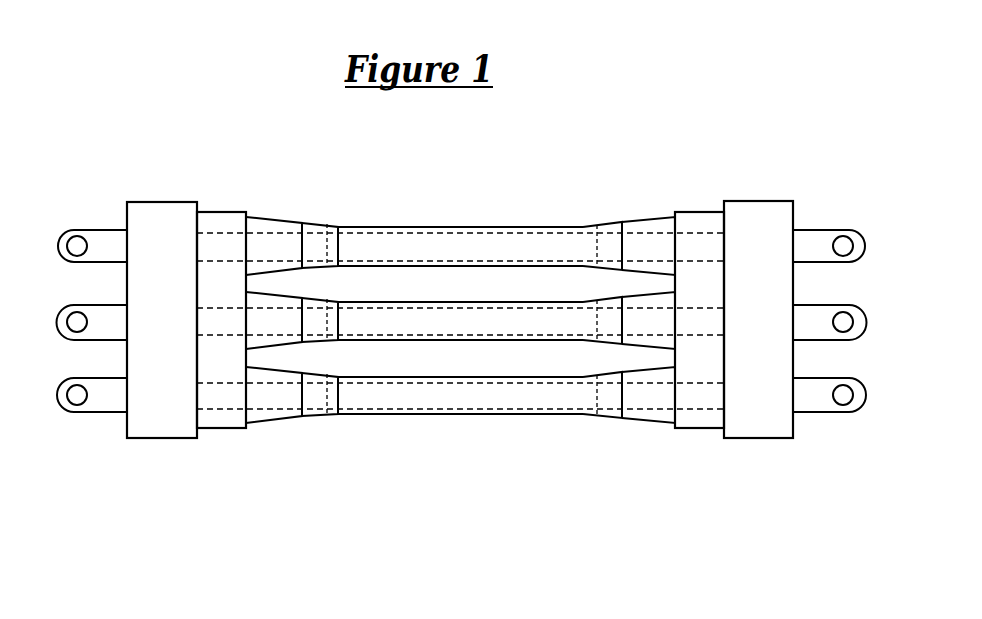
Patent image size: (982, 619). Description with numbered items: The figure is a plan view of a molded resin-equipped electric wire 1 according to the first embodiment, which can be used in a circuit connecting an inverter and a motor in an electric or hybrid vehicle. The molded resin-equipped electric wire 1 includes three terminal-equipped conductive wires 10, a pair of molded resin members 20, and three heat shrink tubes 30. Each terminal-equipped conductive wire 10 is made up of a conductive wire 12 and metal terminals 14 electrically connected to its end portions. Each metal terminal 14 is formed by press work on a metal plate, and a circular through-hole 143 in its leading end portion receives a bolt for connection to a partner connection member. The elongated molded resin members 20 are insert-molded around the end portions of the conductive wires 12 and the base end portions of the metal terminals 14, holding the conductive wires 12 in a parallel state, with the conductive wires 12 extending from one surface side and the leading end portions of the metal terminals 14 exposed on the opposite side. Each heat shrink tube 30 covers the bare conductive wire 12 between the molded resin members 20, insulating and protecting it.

The molded resin-equipped electric wire 1 is at (168, 162).
The terminal-equipped conductive wire 10 is at (573, 270).
The conductive wire 12 is at (510, 376).
The metal terminal 14 is at (110, 230).
The through-hole 143 is at (77, 240).
The molded resin member 20 is at (216, 212).
The heat shrink tube 30 is at (423, 377).